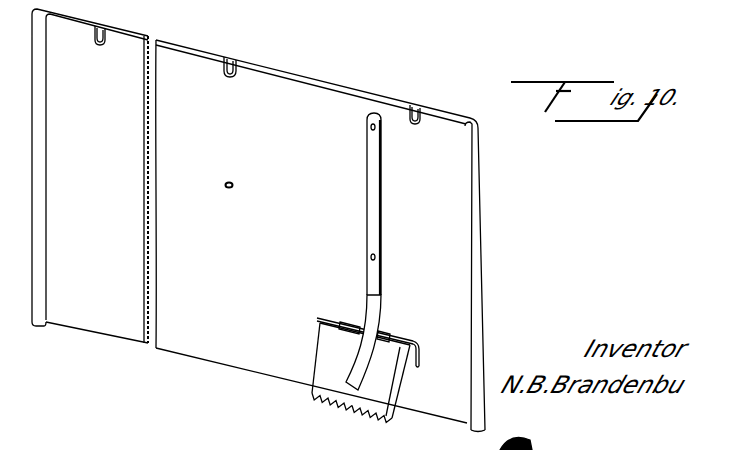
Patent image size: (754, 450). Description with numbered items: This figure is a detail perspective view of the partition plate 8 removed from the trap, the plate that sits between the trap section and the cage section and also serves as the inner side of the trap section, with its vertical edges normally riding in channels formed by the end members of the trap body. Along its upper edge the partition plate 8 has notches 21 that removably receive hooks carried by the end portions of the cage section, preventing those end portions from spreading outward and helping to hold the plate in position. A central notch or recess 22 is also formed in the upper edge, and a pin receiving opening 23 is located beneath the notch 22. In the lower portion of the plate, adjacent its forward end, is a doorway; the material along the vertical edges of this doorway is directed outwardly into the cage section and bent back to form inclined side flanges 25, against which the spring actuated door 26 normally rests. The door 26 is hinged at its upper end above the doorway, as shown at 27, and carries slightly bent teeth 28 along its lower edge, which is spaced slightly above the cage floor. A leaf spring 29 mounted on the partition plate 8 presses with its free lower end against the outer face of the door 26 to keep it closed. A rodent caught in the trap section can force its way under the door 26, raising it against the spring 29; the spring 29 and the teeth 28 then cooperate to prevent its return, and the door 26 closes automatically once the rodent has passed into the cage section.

The partition plate 8 is at (430, 223).
The notches 21 is at (101, 27).
The central notch or recess 22 is at (235, 62).
The pin receiving opening 23 is at (233, 184).
The inclined side flanges 25 is at (402, 397).
The spring actuated door 26 is at (370, 402).
The hinge 27 is at (388, 337).
The teeth 28 is at (317, 403).
The leaf spring 29 is at (377, 202).